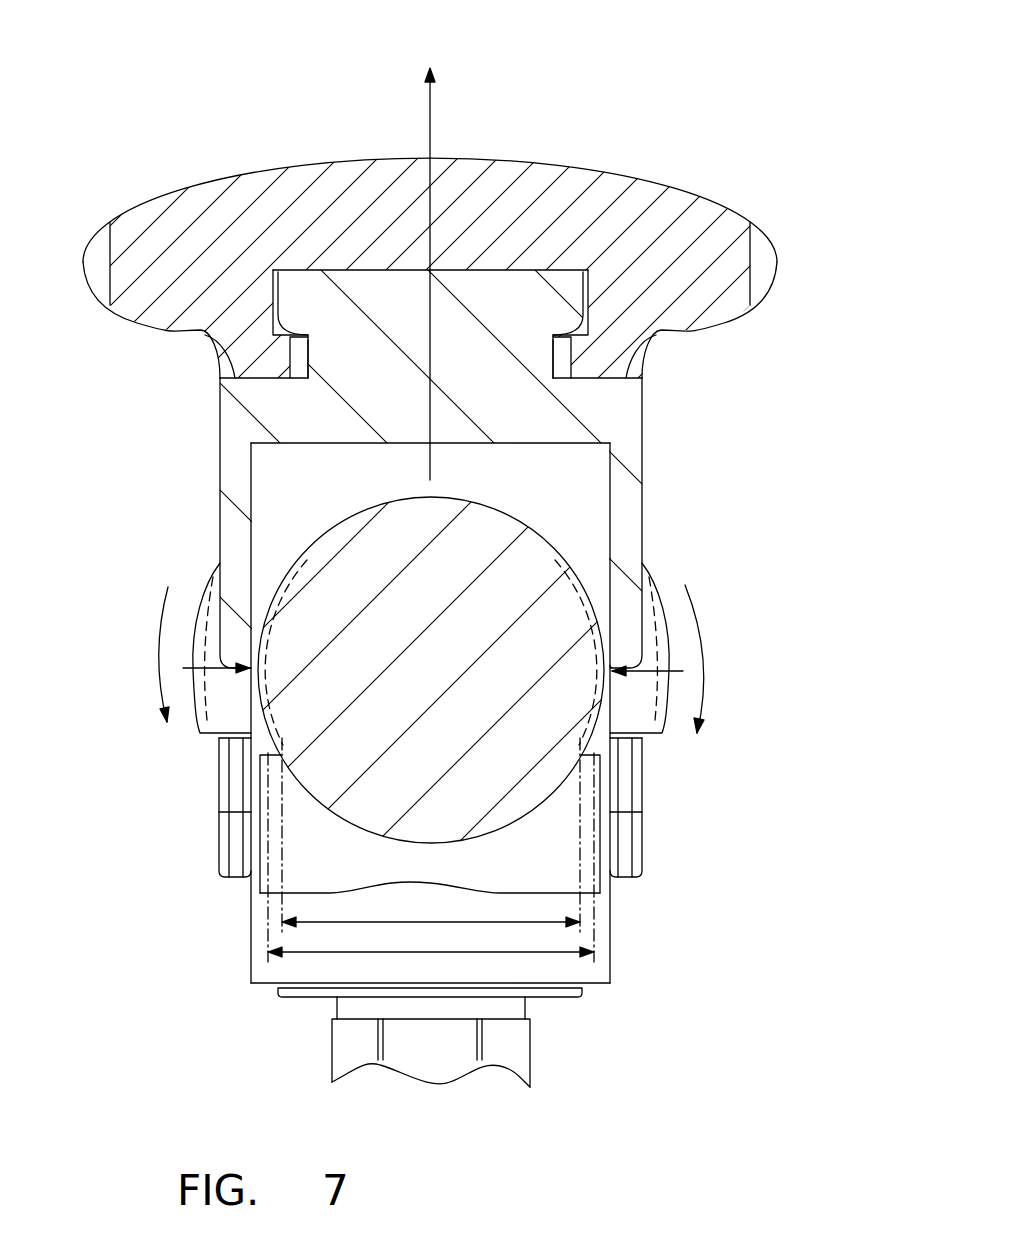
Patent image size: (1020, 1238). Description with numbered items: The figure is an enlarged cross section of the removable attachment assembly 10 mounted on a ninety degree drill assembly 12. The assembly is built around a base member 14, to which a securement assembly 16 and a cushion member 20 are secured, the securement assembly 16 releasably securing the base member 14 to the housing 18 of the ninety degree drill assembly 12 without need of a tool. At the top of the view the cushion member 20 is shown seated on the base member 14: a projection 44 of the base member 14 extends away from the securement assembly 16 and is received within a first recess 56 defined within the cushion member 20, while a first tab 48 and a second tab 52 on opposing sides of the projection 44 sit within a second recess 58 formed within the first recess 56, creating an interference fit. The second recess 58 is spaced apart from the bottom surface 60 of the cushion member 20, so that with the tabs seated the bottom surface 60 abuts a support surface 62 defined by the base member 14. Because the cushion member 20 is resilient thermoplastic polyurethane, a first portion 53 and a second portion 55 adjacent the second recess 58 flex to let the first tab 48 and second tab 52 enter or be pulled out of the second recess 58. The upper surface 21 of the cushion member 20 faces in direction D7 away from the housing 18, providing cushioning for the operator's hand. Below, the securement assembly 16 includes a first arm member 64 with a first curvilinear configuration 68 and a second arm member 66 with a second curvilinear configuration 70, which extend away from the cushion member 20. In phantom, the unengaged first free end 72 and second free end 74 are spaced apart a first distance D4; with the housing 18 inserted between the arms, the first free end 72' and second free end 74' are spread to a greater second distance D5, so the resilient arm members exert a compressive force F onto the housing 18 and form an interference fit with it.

The removable attachment assembly 10 is at (600, 78).
The ninety degree drill assembly 12 is at (630, 942).
The base member 14 is at (645, 540).
The securement assembly 16 is at (192, 730).
The housing 18 is at (343, 520).
The cushion member 20 is at (292, 188).
The surface 21 is at (365, 160).
The projection 44 is at (467, 320).
The first tab 48 is at (548, 300).
The second tab 52 is at (305, 290).
The first portion 53 is at (597, 342).
The second portion 55 is at (270, 348).
The first recess 56 is at (302, 380).
The second recess 58 is at (587, 283).
The bottom surface 60 is at (208, 336).
The support surface 62 is at (260, 378).
The first arm member 64 is at (633, 625).
The second arm member 66 is at (220, 570).
The first curvilinear configuration 68 is at (703, 663).
The second curvilinear configuration 70 is at (162, 647).
The first free end 72 is at (579, 648).
The first free end 72' is at (679, 806).
The second free end 74 is at (392, 807).
The second free end 74' is at (184, 807).
The compressive force F is at (204, 653).
The first distance D4 is at (437, 921).
The second distance D5 is at (440, 955).
The direction D7 is at (433, 113).